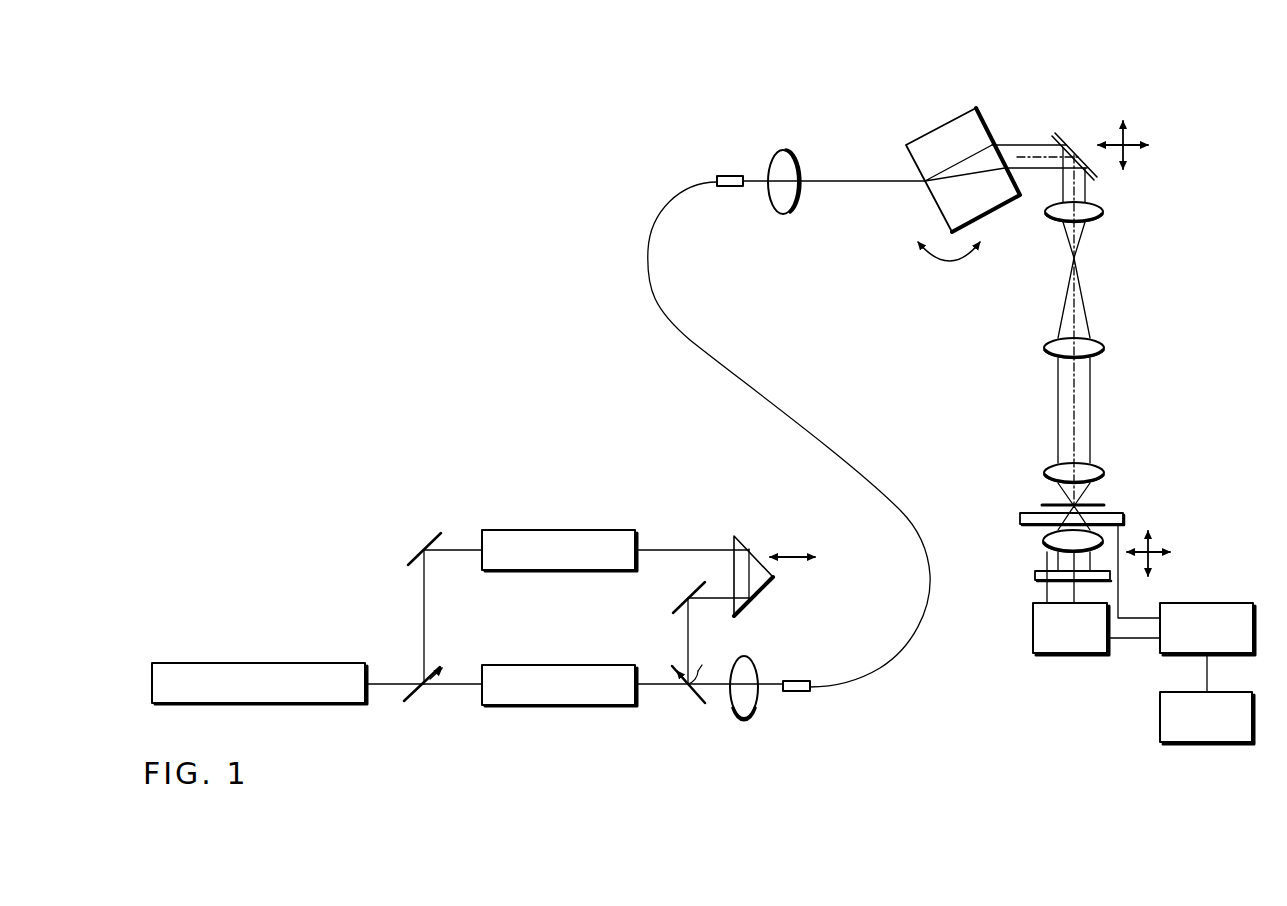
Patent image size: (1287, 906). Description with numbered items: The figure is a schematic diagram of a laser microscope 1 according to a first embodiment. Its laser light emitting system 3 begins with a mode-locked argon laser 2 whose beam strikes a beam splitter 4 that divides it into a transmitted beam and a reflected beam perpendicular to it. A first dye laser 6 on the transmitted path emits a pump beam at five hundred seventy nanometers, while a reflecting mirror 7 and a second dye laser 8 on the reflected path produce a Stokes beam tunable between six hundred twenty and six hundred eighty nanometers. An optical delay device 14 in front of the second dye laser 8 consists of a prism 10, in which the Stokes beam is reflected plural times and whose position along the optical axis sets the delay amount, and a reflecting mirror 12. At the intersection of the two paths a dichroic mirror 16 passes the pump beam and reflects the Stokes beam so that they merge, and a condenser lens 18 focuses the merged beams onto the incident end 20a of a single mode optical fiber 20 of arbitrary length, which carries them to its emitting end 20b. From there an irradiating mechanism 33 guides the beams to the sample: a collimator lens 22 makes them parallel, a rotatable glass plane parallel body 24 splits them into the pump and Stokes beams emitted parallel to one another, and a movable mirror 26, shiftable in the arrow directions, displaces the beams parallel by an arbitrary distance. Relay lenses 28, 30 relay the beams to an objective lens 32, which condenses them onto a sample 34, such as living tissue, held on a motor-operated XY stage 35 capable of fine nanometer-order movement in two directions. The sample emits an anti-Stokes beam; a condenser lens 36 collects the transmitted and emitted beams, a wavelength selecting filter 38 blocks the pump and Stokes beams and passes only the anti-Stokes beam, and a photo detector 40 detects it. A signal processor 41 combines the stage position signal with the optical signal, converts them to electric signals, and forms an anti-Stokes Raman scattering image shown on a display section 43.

The laser microscope 1 is at (455, 323).
The mode-locked argon laser 2 is at (278, 663).
The laser light emitting system 3 is at (632, 720).
The beam splitter 4 is at (414, 698).
The first dye laser 6 is at (571, 706).
The reflecting mirror 7 is at (427, 546).
The second dye laser 8 is at (563, 530).
The prism 10 is at (757, 566).
The reflecting mirror 12 is at (698, 582).
The optical delay device 14 is at (780, 508).
The dichroic mirror 16 is at (696, 702).
The condenser lens 18 is at (745, 718).
The optical fiber 20 is at (868, 680).
The incident end 20a is at (797, 692).
The emitting end 20b is at (730, 176).
The collimator lens 22 is at (786, 150).
The plane parallel body 24 is at (976, 108).
The movable mirror 26 is at (1097, 180).
The relay lens 28 is at (1103, 212).
The relay lens 30 is at (1104, 348).
The objective lens 32 is at (1104, 473).
The irradiating mechanism 33 is at (1183, 44).
The sample 34 is at (1104, 507).
The motor-operated XY stage 35 is at (1123, 518).
The condenser lens 36 is at (1043, 541).
The wavelength selecting filter 38 is at (1035, 575).
The photo detector 40 is at (1033, 627).
The signal processor 41 is at (1243, 603).
The display section 43 is at (1160, 718).